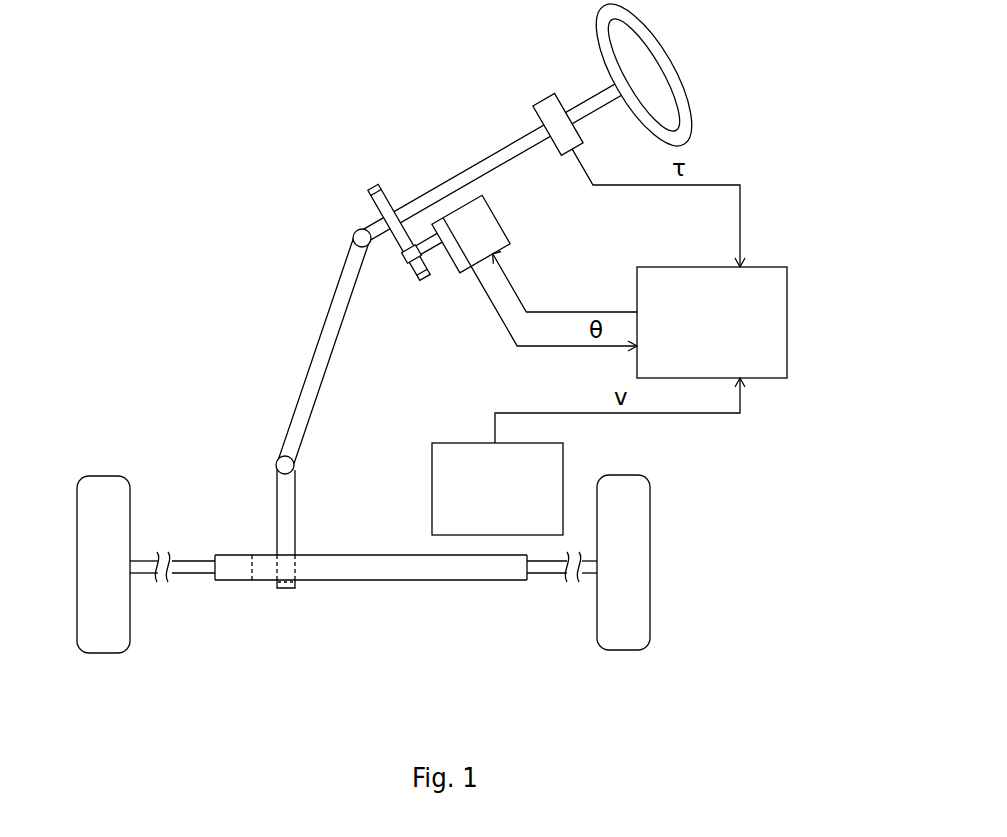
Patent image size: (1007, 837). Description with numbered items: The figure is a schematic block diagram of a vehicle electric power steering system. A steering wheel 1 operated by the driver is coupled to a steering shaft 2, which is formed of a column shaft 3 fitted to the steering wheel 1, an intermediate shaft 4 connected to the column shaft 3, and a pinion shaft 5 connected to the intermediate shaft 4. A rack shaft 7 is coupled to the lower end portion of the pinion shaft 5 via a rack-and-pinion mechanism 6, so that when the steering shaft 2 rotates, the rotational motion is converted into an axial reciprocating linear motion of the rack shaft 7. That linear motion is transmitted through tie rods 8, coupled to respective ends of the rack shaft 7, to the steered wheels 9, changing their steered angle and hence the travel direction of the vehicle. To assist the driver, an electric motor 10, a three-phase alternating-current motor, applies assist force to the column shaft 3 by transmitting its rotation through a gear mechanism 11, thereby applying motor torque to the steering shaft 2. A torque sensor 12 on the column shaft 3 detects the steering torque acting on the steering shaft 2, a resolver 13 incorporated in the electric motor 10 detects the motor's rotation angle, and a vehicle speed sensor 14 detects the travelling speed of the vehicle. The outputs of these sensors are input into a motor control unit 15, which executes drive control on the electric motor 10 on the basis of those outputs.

The steering wheel 1 is at (676, 66).
The steering shaft 2 is at (293, 216).
The column shaft 3 is at (355, 227).
The intermediate shaft 4 is at (317, 345).
The pinion shaft 5 is at (277, 484).
The rack-and-pinion mechanism 6 is at (320, 563).
The rack shaft 7 is at (445, 580).
The tie rods 8 is at (193, 576).
The steered wheels 9 is at (102, 654).
The electric motor 10 is at (500, 225).
The gear mechanism 11 is at (414, 270).
The torque sensor 12 is at (541, 103).
The resolver 13 is at (461, 274).
The vehicle speed sensor 14 is at (469, 443).
The motor control unit 15 is at (788, 320).